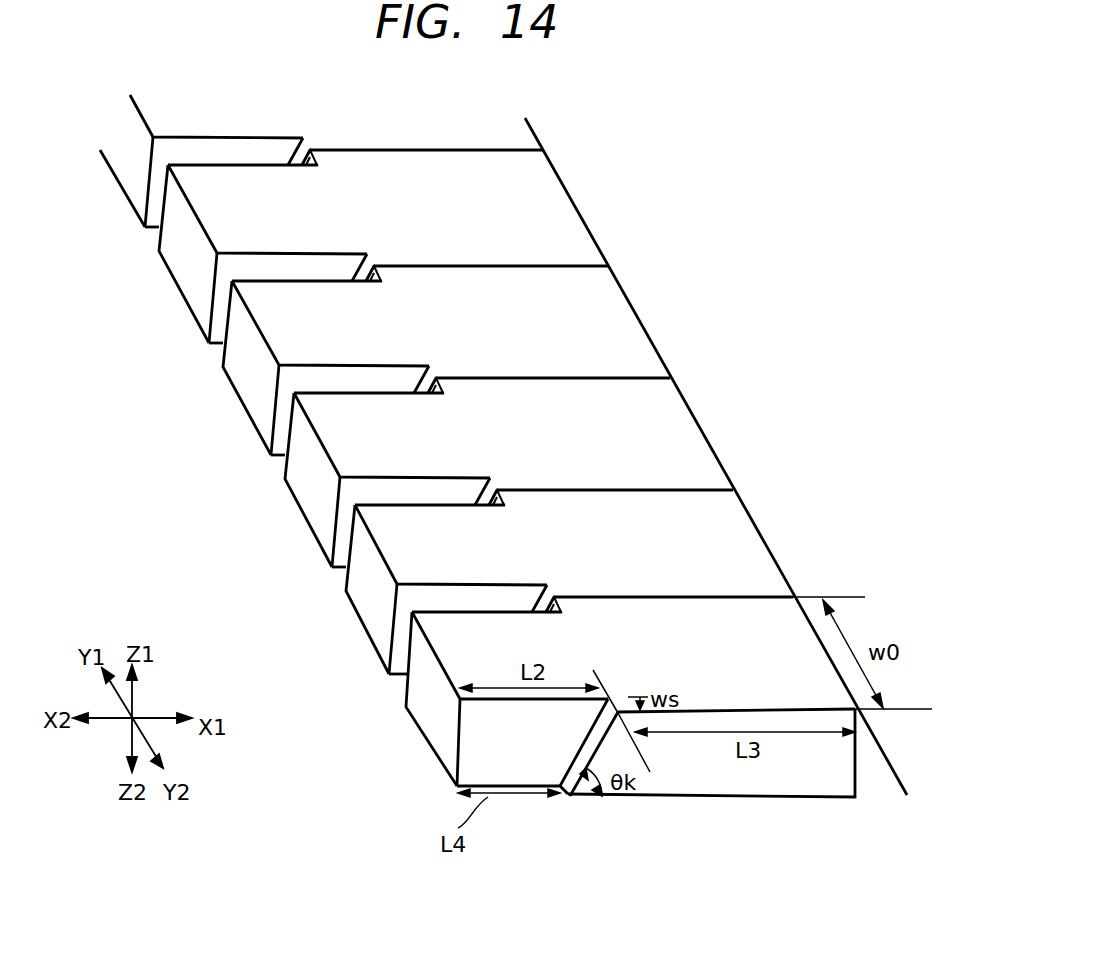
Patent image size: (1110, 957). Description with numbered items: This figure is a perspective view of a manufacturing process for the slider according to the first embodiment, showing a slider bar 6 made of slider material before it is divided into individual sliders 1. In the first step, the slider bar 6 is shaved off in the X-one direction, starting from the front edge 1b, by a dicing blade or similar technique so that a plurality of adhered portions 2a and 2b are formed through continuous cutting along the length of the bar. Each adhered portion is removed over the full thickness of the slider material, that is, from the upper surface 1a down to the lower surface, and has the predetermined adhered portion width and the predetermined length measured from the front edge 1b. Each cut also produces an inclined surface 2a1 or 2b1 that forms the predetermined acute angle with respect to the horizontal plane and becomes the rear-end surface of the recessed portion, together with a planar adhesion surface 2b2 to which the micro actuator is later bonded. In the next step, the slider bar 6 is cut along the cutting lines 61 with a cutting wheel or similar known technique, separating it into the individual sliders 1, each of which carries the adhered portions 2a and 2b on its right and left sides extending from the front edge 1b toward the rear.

The slider 1 is at (520, 143).
The upper surface 1a is at (437, 630).
The front edge 1b is at (427, 720).
The adhered portion 2a is at (407, 661).
The inclined surface 2a1 is at (317, 161).
The adhered portion 2b is at (515, 800).
The inclined surface 2b1 is at (303, 145).
The planar adhesion surface 2b2 is at (465, 753).
The slider bar 6 is at (660, 158).
The cutting lines 61 is at (500, 155).